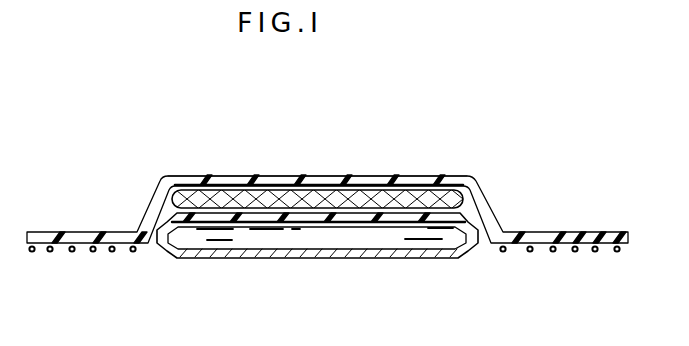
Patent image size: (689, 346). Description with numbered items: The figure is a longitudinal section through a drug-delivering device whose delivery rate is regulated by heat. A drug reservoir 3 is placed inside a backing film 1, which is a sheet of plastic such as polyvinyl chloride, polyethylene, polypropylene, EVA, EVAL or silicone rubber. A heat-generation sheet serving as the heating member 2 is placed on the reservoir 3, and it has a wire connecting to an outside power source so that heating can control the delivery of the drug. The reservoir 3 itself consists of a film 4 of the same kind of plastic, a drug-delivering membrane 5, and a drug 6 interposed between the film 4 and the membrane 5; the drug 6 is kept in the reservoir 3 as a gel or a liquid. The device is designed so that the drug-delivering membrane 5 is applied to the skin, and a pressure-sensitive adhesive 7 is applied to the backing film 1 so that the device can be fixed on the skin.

The backing film 1 is at (617, 232).
The heating member 2 is at (461, 192).
The drug reservoir 3 is at (465, 259).
The film 4 is at (461, 214).
The drug-delivering membrane 5 is at (265, 258).
The drug 6 is at (339, 227).
The pressure-sensitive adhesive 7 is at (553, 254).